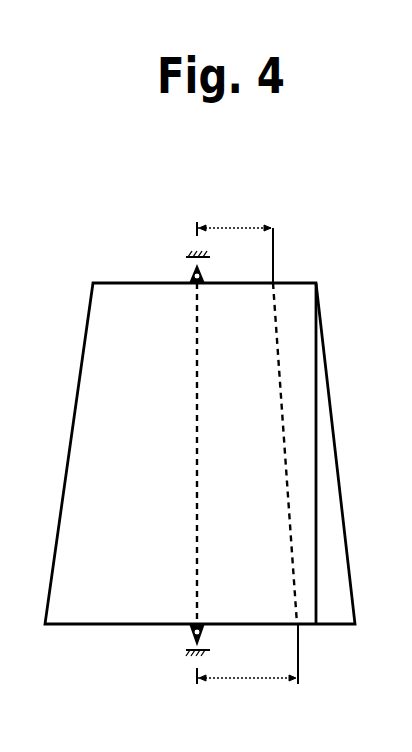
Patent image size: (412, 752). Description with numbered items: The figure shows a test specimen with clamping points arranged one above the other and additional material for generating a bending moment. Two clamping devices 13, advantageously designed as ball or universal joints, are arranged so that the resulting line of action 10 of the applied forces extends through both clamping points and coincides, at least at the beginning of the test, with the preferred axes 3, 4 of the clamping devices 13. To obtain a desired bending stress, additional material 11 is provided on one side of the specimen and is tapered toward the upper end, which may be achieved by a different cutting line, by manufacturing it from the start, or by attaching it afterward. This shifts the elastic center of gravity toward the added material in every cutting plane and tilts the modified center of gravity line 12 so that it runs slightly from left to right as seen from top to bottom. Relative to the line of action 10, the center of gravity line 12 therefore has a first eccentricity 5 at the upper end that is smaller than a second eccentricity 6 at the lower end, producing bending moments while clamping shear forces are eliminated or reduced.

The preferred axis of the clamping device 3 is at (98, 453).
The preferred axis of the clamping device 4 is at (98, 453).
The line of action 10 is at (195, 405).
The first eccentricity 5 is at (240, 228).
The second eccentricity 6 is at (239, 678).
The additional material 11 is at (331, 555).
The modified center of gravity line 12 is at (288, 518).
The clamping device 13 is at (186, 268).